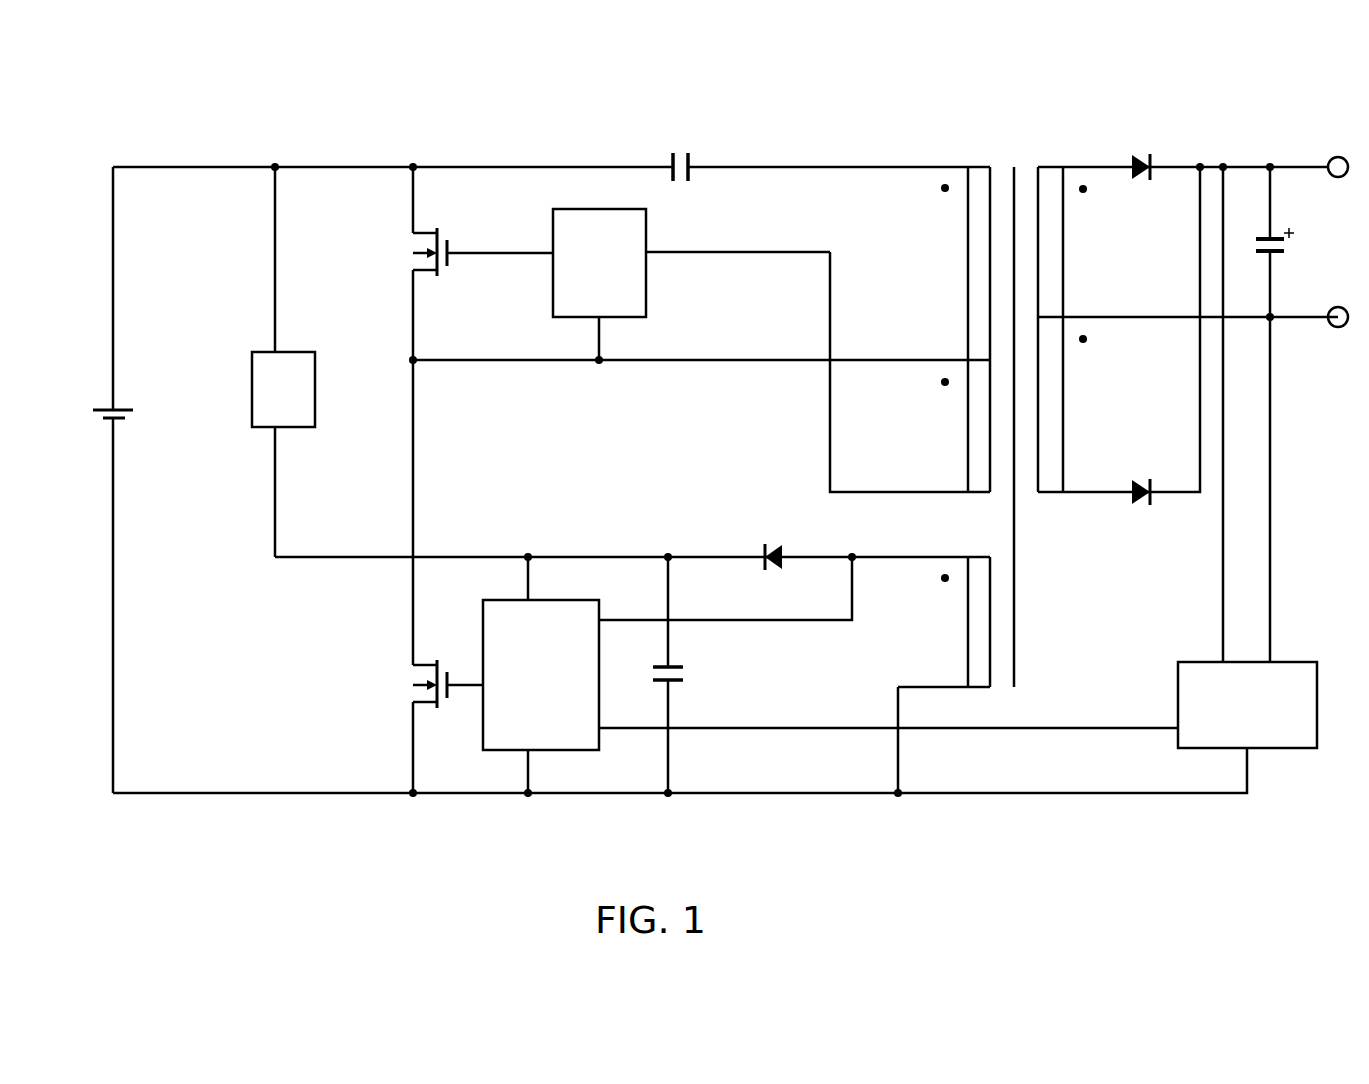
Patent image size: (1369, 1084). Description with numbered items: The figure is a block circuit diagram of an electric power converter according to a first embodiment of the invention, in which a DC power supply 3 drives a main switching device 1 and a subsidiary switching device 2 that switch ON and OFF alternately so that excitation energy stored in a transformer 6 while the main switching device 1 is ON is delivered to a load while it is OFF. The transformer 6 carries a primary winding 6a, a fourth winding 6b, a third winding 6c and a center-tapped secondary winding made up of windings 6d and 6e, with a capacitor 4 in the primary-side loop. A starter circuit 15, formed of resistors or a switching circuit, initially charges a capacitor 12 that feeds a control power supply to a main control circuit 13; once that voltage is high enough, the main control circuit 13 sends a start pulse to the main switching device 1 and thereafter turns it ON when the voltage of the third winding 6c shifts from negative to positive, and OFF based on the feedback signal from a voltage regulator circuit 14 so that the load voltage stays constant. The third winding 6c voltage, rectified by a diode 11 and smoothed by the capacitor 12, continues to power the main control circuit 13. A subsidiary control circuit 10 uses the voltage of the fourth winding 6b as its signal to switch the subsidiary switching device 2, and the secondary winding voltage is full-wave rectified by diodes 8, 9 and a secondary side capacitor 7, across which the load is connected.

The main switching device 1 is at (400, 685).
The subsidiary switching device 2 is at (400, 247).
The DC power supply 3 is at (92, 398).
The capacitor 4 is at (685, 133).
The transformer 6 is at (1027, 133).
The primary winding 6a is at (968, 303).
The fourth winding 6b is at (968, 455).
The third winding 6c is at (968, 665).
The secondary winding 6d is at (1065, 245).
The secondary winding 6e is at (1065, 378).
The secondary side capacitor 7 is at (1297, 248).
The diode 8 is at (1143, 513).
The diode 9 is at (1140, 133).
The subsidiary control circuit 10 is at (665, 283).
The diode 11 is at (757, 533).
The capacitor 12 is at (705, 663).
The main control circuit 13 is at (568, 758).
The voltage regulator circuit 14 is at (1275, 758).
The starter circuit 15 is at (250, 382).